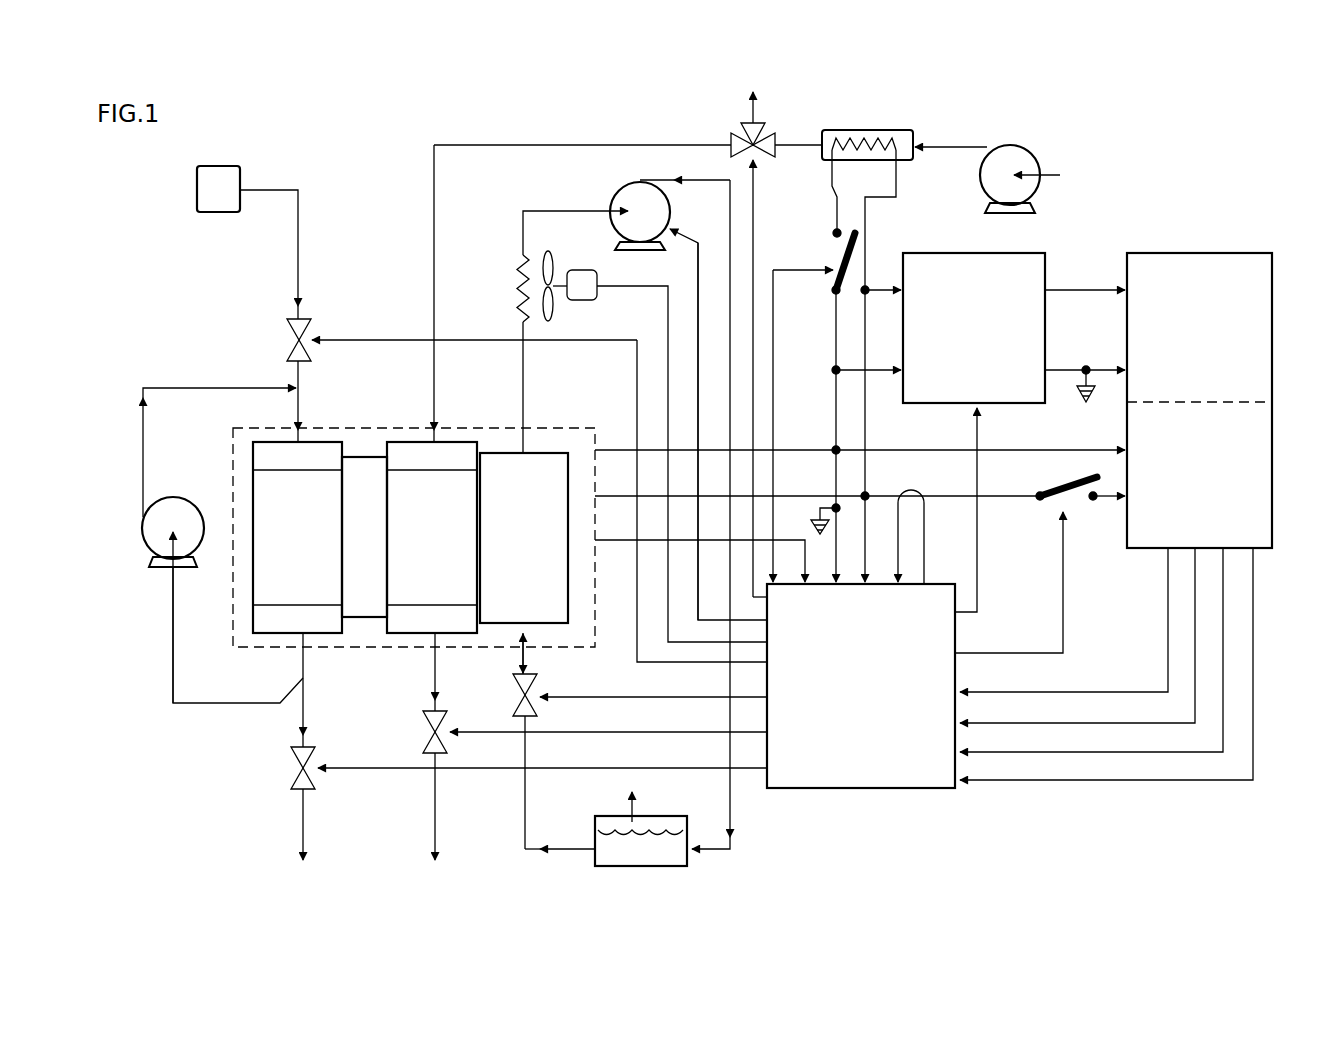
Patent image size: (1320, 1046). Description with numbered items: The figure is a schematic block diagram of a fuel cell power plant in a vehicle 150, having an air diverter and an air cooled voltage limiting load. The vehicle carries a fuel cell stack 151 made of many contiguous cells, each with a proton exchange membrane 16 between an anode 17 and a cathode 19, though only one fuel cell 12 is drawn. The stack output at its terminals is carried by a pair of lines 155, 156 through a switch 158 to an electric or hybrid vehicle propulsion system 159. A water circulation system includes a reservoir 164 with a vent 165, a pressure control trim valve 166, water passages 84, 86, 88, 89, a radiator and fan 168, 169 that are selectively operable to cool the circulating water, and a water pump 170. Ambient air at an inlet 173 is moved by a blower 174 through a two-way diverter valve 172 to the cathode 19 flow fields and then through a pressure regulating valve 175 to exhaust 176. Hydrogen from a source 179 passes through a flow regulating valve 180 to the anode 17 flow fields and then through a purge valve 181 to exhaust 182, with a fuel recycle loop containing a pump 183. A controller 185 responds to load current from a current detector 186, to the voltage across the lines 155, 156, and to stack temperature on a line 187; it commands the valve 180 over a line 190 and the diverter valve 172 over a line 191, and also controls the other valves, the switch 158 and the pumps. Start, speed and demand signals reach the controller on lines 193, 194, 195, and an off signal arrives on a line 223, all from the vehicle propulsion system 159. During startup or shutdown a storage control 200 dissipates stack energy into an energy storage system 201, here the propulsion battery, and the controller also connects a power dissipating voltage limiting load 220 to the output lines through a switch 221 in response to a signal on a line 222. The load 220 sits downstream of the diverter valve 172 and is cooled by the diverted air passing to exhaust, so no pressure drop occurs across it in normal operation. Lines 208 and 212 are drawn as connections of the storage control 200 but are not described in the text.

The fuel cell 12 is at (454, 436).
The proton exchange membrane 16 is at (354, 564).
The anode 17 is at (288, 564).
The cathode 19 is at (422, 564).
The water passage 84 is at (514, 568).
The water passage 86 is at (551, 568).
The water passage 88 is at (514, 598).
The water passage 89 is at (551, 598).
The vehicle 150 is at (1181, 149).
The fuel cell stack 151 is at (327, 424).
The line 155 is at (1062, 368).
The line 156 is at (784, 496).
The switch 158 is at (1075, 500).
The vehicle propulsion system 159 is at (1185, 522).
The reservoir 164 is at (663, 828).
The vent 165 is at (631, 812).
The pressure control trim valve 166 is at (512, 688).
The radiator 168 is at (517, 282).
The fan 169 is at (587, 298).
The water pump 170 is at (620, 188).
The two-way diverter valve 172 is at (745, 132).
The inlet 173 is at (1045, 175).
The blower 174 is at (1008, 146).
The pressure regulating valve 175 is at (422, 725).
The exhaust 176 is at (430, 860).
The source 179 is at (213, 166).
The flow regulating valve 180 is at (287, 342).
The purge valve 181 is at (296, 758).
The exhaust 182 is at (298, 860).
The pump 183 is at (157, 537).
The controller 185 is at (848, 712).
The current detector 186 is at (927, 512).
The line 187 is at (763, 538).
The line 190 is at (343, 340).
The line 191 is at (773, 320).
The line 193 is at (1197, 585).
The line 194 is at (1167, 623).
The line 195 is at (1223, 677).
The storage control 200 is at (960, 253).
The energy storage system 201 is at (1190, 252).
The storage output line 208 is at (1055, 290).
The controller signal line 212 is at (977, 437).
The voltage limiting load 220 is at (863, 130).
The switch 221 is at (832, 258).
The line 222 is at (773, 362).
The line 223 is at (1253, 763).